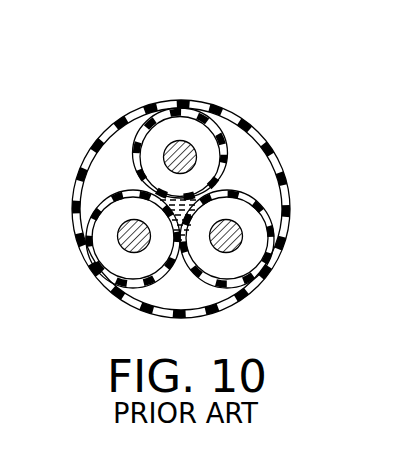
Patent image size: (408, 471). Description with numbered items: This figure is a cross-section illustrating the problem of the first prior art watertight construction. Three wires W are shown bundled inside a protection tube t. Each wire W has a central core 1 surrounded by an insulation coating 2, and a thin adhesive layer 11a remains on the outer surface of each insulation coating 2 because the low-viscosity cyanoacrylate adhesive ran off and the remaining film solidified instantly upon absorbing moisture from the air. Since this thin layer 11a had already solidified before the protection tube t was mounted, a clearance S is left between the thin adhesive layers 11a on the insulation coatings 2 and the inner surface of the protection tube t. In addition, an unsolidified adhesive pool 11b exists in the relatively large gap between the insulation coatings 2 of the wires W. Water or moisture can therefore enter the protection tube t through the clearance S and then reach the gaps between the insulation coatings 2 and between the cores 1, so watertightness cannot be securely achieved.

The core 1 is at (177, 143).
The insulation coating 2 is at (195, 130).
The wire W is at (182, 115).
The thin adhesive layer 11a is at (220, 127).
The adhesive pool 11b is at (180, 223).
The protection tube t is at (262, 132).
The clearance S is at (252, 178).